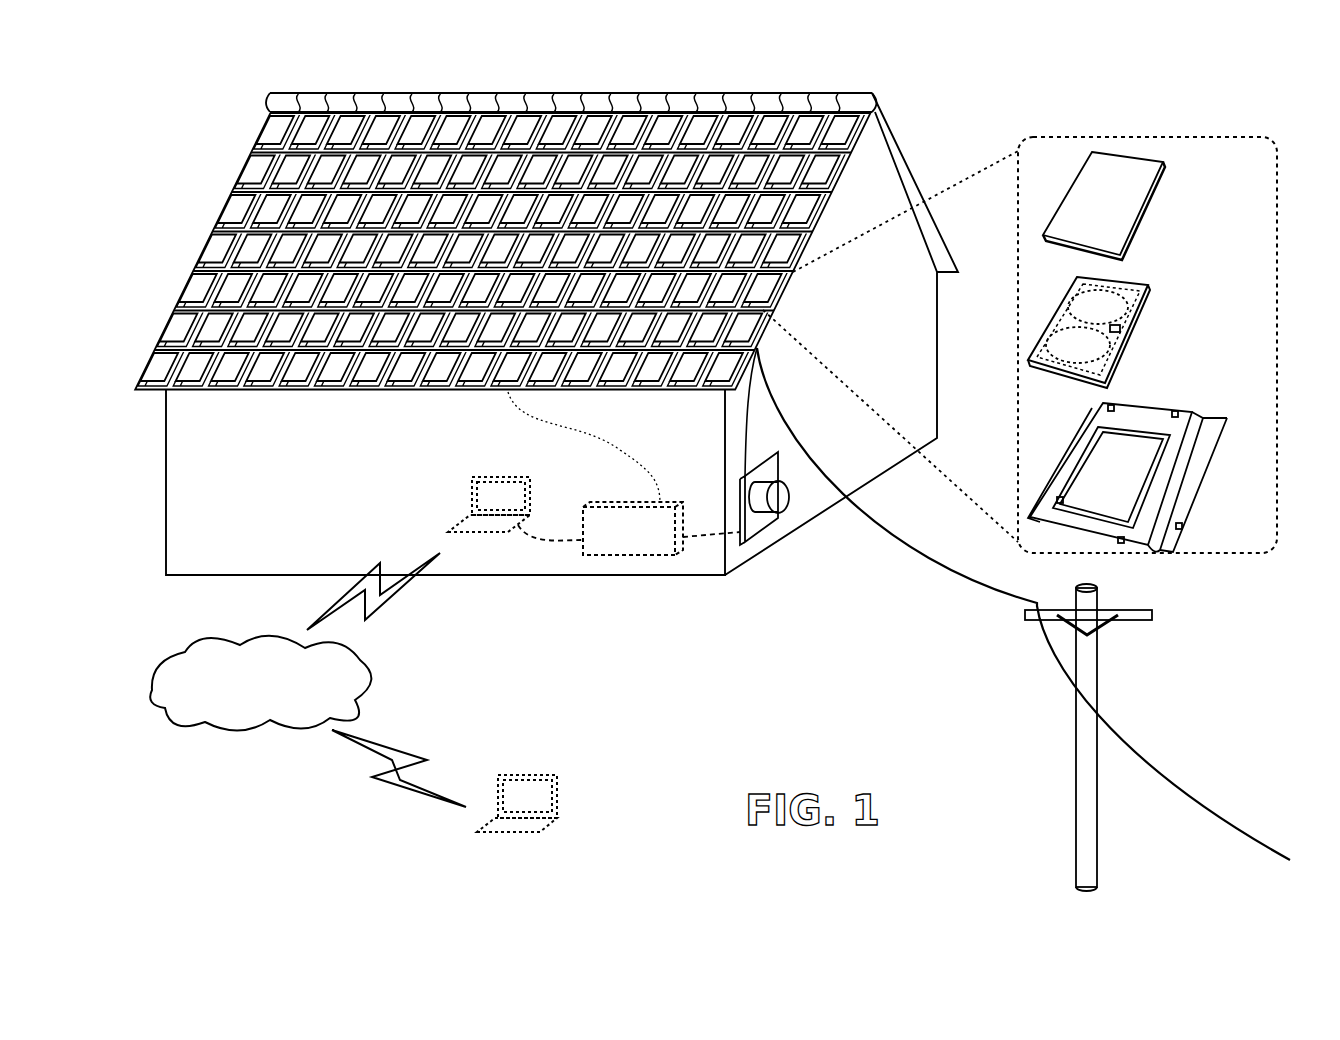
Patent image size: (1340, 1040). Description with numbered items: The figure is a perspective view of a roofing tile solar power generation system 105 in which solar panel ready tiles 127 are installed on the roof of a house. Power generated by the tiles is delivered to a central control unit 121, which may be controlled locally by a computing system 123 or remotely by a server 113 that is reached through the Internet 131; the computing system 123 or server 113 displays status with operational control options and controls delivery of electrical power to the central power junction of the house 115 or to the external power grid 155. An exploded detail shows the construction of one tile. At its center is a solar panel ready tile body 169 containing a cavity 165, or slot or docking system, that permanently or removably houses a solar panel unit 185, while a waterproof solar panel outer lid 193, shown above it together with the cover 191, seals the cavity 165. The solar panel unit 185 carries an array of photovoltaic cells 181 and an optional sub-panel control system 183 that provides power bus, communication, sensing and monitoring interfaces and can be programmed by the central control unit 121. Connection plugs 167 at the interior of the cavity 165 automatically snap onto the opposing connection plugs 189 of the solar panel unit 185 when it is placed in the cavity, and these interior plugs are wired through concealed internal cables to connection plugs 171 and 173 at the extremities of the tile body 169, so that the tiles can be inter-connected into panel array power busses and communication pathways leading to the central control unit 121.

The roofing tile solar power generation system 105 is at (1275, 93).
The solar panel ready tiles 127 is at (292, 392).
The computing system 123 is at (505, 480).
The central control unit 121 is at (607, 500).
The house (central power junction) 115 is at (792, 457).
The external power grid 155 is at (1215, 820).
The Internet 131 is at (324, 692).
The server 113 is at (560, 796).
The glass cover 191 is at (1140, 200).
The water proof solar panel outer lid 193 is at (1121, 250).
The solar panel unit connection plugs 189 is at (1140, 304).
The photovoltaic cells 181 is at (1057, 336).
The sub-panel control system 183 is at (1122, 332).
The solar panel unit 185 is at (1108, 372).
The cavity (slot or docking system) 165 is at (1082, 471).
The connection plugs at the interior of the cavity 167 is at (1100, 438).
The connection plugs at the extremities 173 is at (1176, 411).
The connection plugs at the extremities 171 is at (1207, 452).
The solar panel ready tile body 169 is at (1195, 496).